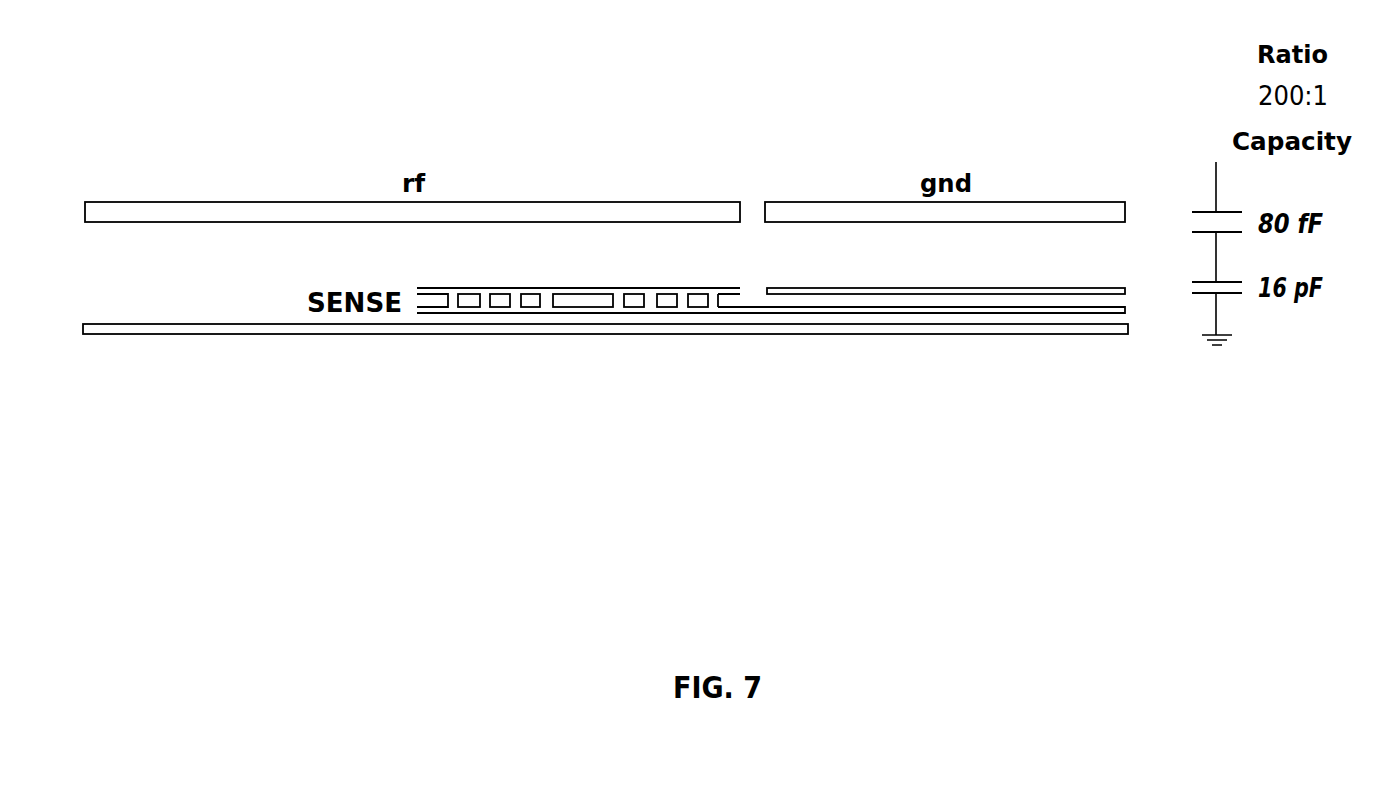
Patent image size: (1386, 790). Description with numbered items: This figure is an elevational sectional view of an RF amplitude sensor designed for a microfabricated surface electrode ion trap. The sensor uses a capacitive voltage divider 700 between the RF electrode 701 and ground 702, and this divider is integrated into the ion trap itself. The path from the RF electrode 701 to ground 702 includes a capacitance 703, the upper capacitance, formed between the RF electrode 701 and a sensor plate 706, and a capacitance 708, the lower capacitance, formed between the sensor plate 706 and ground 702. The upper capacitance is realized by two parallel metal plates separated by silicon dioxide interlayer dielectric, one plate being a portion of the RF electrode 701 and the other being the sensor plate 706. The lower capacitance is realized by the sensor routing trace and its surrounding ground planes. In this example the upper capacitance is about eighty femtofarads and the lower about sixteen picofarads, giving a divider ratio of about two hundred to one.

The capacitive voltage divider 700 is at (1215, 150).
The RF electrode 701 is at (319, 202).
The ground 702 is at (252, 324).
The capacitance 703 is at (1196, 212).
The sensor plate 706 is at (512, 288).
The capacitance 708 is at (1208, 293).